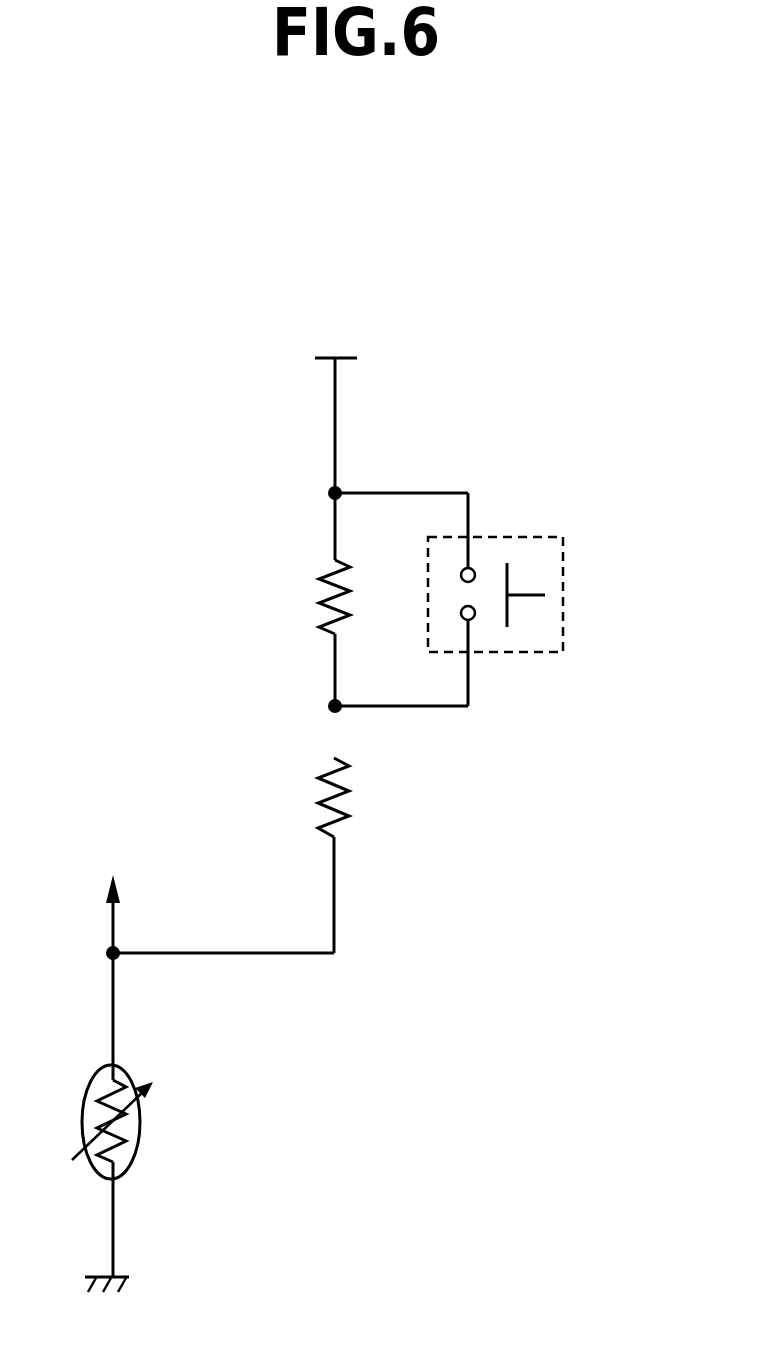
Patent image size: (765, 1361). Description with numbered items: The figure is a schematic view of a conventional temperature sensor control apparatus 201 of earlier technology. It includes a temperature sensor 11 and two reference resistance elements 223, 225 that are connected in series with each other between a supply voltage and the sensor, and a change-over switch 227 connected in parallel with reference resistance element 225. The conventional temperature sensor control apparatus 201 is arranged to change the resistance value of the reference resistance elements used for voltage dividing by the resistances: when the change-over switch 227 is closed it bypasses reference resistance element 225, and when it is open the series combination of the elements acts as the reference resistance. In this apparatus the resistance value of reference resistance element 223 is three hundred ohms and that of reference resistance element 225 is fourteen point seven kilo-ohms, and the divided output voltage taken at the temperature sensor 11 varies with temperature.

The conventional temperature sensor control apparatus 201 is at (550, 268).
The reference resistance element 225 is at (330, 600).
The reference resistance element 223 is at (327, 798).
The change-over switch 227 is at (518, 535).
The temperature sensor 11 is at (93, 1073).